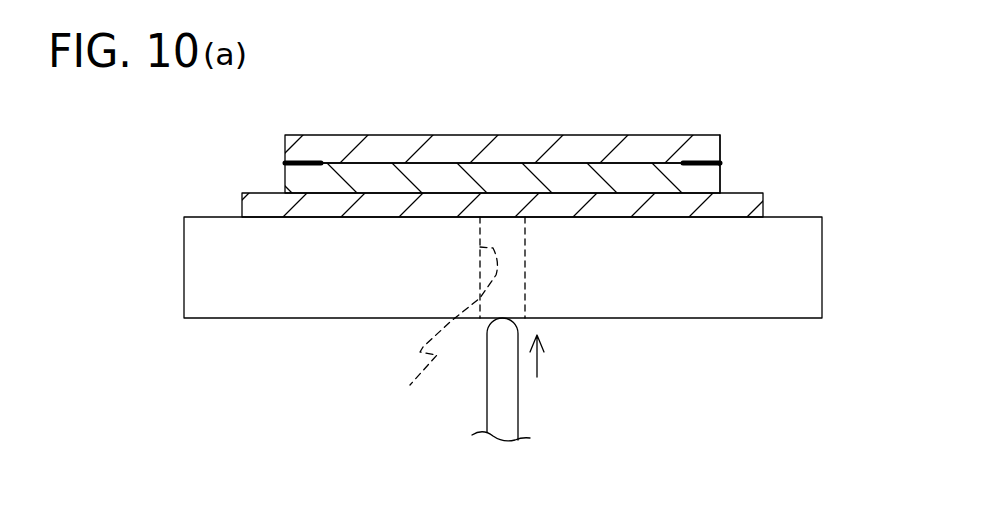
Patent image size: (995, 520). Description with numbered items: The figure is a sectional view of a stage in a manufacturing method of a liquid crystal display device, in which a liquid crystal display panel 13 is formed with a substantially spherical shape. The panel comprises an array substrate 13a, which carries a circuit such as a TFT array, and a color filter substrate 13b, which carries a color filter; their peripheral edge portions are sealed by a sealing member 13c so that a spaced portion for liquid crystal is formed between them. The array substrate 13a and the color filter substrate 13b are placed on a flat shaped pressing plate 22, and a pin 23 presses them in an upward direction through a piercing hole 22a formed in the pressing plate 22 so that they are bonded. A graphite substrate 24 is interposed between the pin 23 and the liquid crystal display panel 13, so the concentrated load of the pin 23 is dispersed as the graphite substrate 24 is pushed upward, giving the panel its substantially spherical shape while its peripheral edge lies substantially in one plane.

The liquid crystal display panel 13 is at (551, 96).
The array substrate 13a is at (721, 172).
The color filter substrate 13b is at (670, 147).
The sealing member 13c is at (708, 178).
The pressing plate 22 is at (802, 255).
The piercing hole 22a is at (432, 336).
The pin 23 is at (508, 398).
The graphite substrate 24 is at (723, 205).